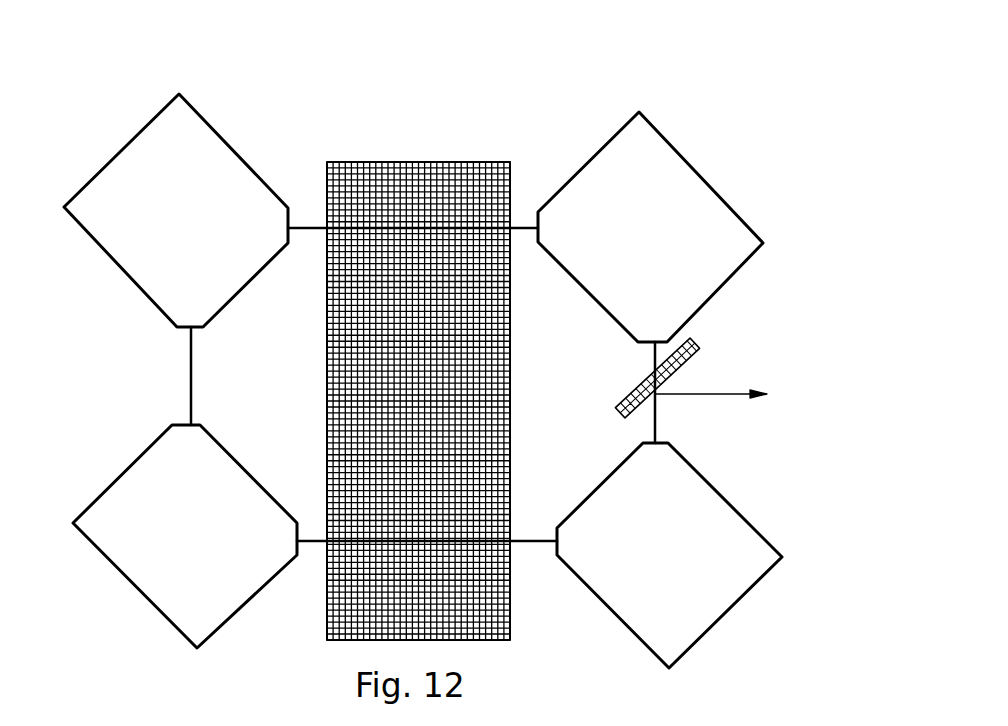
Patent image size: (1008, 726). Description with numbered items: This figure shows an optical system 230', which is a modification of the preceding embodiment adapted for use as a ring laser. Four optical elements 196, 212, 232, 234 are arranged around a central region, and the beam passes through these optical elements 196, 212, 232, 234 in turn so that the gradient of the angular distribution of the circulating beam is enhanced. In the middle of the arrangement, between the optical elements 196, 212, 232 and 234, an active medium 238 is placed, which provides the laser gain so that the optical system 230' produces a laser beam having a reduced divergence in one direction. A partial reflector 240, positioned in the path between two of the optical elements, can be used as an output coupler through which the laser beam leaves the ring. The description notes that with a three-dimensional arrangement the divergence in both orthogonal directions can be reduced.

The optical system 230' is at (470, 361).
The optical element 196 is at (123, 243).
The optical element 234 is at (148, 562).
The optical element 212 is at (713, 235).
The optical element 232 is at (702, 505).
The active medium 238 is at (400, 300).
The partial reflector 240 is at (690, 363).